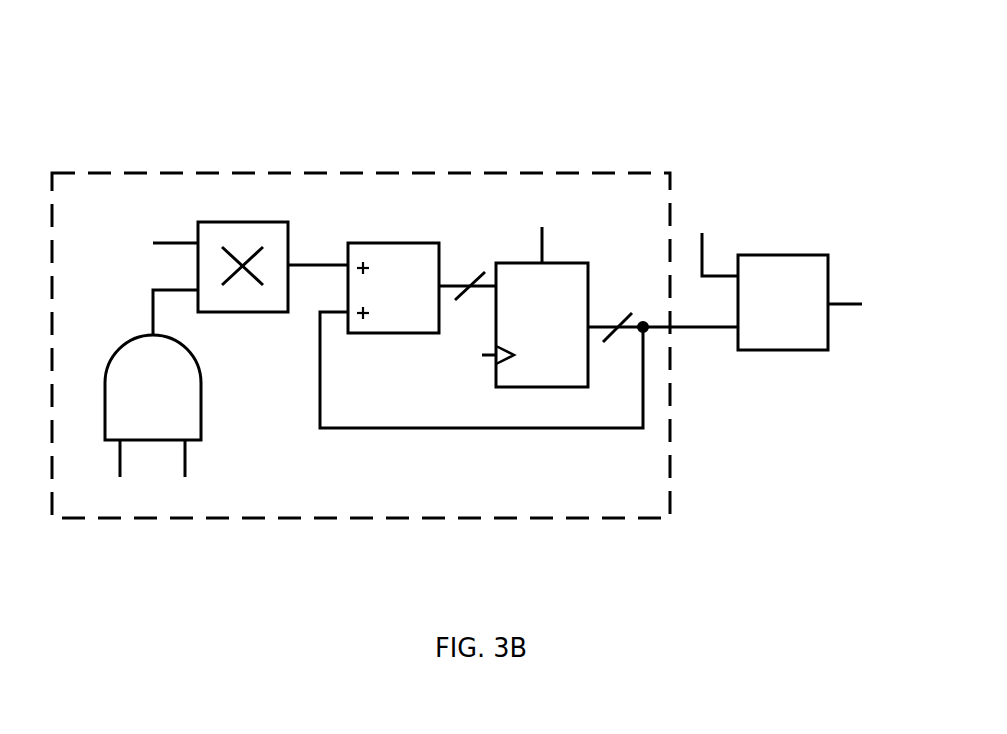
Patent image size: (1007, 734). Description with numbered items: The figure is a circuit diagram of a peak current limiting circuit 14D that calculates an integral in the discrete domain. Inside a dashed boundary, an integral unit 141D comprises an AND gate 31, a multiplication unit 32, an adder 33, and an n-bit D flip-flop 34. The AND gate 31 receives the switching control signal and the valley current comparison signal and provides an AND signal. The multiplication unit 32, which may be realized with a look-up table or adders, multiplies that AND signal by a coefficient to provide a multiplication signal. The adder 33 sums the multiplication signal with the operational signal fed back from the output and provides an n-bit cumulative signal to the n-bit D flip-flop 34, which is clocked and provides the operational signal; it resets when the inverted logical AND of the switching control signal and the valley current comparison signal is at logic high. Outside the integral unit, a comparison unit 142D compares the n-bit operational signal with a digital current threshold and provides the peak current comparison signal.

The peak current limiting circuit 14D is at (820, 145).
The integral unit 141D is at (447, 173).
The comparison unit 142D is at (815, 312).
The AND gate 31 is at (140, 404).
The multiplication unit 32 is at (243, 222).
The adder 33 is at (384, 299).
The n-bit D flip-flop 34 is at (530, 329).